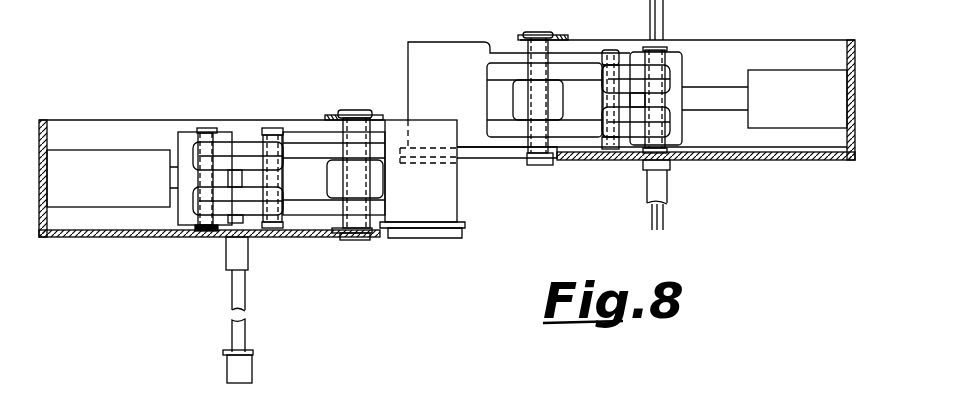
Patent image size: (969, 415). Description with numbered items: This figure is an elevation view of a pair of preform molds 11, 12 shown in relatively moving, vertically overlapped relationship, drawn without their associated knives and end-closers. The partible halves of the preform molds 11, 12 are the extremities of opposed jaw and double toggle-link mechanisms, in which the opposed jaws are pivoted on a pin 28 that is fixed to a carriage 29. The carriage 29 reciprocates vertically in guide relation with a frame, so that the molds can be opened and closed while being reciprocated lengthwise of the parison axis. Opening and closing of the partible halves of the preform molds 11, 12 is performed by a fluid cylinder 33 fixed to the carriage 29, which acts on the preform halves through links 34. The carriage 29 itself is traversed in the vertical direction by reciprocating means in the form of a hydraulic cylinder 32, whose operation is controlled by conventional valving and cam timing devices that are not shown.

The preform mold 11 is at (445, 40).
The preform mold 12 is at (397, 116).
The pin 28 is at (352, 242).
The carriage 29 is at (155, 240).
The hydraulic cylinder 32 is at (225, 370).
The fluid cylinder 33 is at (97, 208).
The links 34 is at (238, 141).